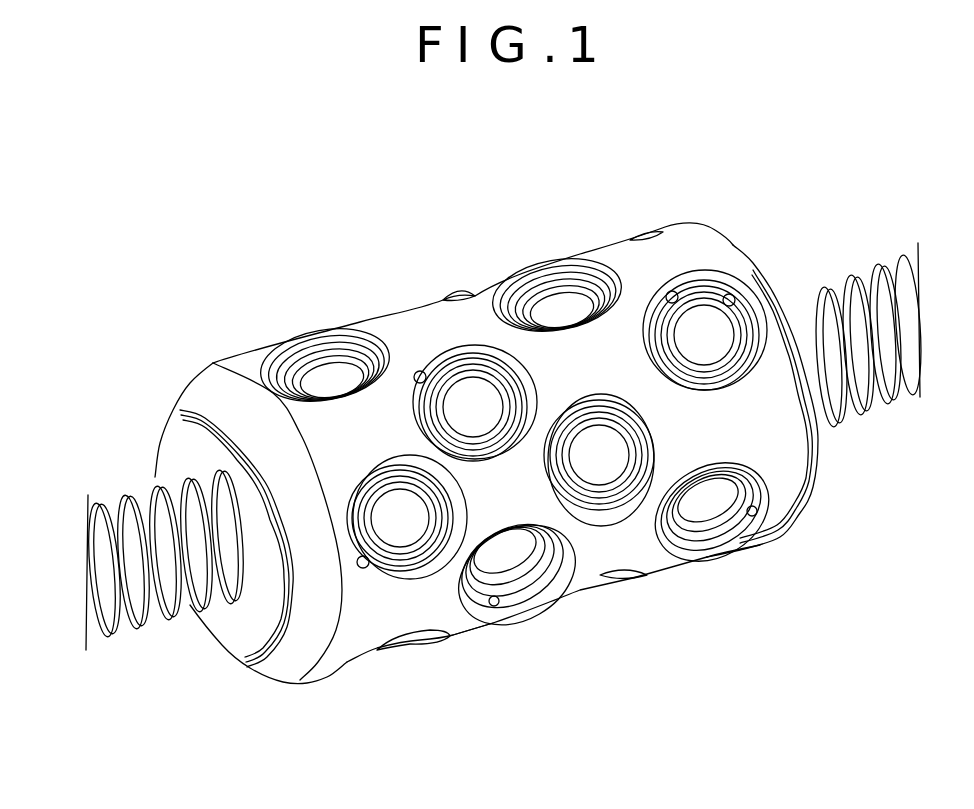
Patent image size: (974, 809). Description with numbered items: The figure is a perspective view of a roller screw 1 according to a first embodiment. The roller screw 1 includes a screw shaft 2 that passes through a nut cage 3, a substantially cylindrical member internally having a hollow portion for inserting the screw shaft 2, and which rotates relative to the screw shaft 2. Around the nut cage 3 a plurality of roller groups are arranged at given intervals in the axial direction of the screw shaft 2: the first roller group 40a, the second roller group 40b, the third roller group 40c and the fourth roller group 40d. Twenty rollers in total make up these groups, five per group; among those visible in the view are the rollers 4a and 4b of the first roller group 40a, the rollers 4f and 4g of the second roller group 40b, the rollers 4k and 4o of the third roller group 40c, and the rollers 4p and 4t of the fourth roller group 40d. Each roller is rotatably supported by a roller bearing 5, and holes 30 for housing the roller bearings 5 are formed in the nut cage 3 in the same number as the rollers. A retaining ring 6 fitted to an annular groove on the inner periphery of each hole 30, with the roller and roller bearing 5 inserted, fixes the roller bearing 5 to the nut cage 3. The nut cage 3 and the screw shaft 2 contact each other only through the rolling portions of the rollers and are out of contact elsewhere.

The roller screw 1 is at (838, 160).
The screw shaft 2 is at (97, 513).
The nut cage 3 is at (213, 366).
The roller 4a is at (333, 375).
The roller 4b is at (397, 530).
The roller 4f is at (445, 314).
The roller 4g is at (517, 566).
The roller 4k is at (607, 475).
The roller 4o is at (568, 302).
The roller 4p is at (706, 505).
The roller 4t is at (704, 323).
The roller bearing 5 is at (447, 358).
The retaining ring 6 is at (417, 372).
The hole 30 is at (283, 357).
The first roller group 40a is at (403, 668).
The second roller group 40b is at (498, 646).
The third roller group 40c is at (593, 622).
The fourth roller group 40d is at (743, 570).